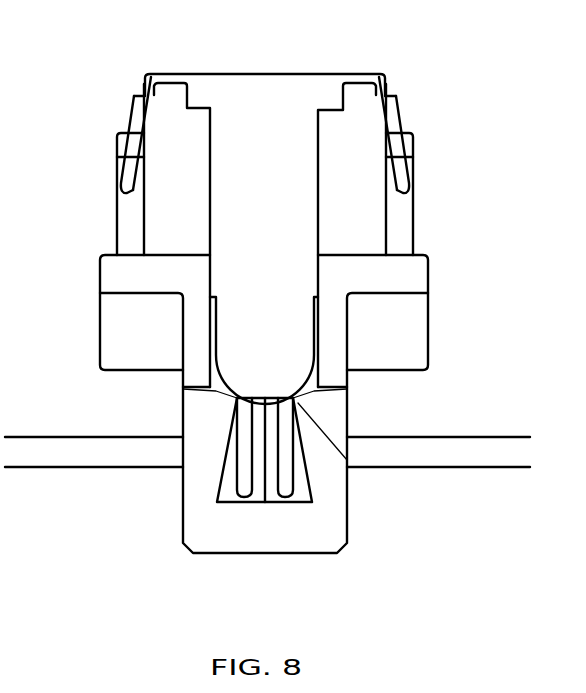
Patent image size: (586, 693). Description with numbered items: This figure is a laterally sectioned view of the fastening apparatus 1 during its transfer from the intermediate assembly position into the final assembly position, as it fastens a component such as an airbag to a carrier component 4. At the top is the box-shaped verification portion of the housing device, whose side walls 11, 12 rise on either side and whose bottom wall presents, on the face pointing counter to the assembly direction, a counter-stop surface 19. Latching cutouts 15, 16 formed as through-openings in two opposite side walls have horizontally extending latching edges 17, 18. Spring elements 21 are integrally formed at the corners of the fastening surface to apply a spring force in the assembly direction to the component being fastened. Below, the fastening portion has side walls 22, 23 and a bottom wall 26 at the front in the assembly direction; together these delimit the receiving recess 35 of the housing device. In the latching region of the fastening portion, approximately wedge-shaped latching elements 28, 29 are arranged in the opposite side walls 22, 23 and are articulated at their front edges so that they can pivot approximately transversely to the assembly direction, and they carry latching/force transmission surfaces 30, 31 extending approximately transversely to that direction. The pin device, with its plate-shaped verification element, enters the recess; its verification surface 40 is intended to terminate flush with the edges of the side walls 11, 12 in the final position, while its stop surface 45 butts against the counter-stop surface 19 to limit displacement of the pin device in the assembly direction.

The fastening apparatus 1 is at (413, 62).
The carrier component 4 is at (507, 447).
The side wall 11 is at (393, 128).
The side wall 12 is at (129, 120).
The latching cutout 15 is at (405, 224).
The latching cutout 16 is at (128, 218).
The latching edge 17 is at (415, 160).
The latching edge 18 is at (117, 158).
The counter-stop surface 19 is at (165, 255).
The spring element 21 is at (373, 530).
The side wall 22 is at (183, 337).
The side wall 23 is at (347, 318).
The bottom wall 26 is at (203, 540).
The latching element 28 is at (205, 402).
The latching element 29 is at (330, 432).
The latching/force transmission surface 30 is at (347, 460).
The latching/force transmission surface 31 is at (235, 405).
The receiving recess 35 is at (375, 212).
The verification surface 40 is at (253, 73).
The stop surface 45 is at (263, 402).